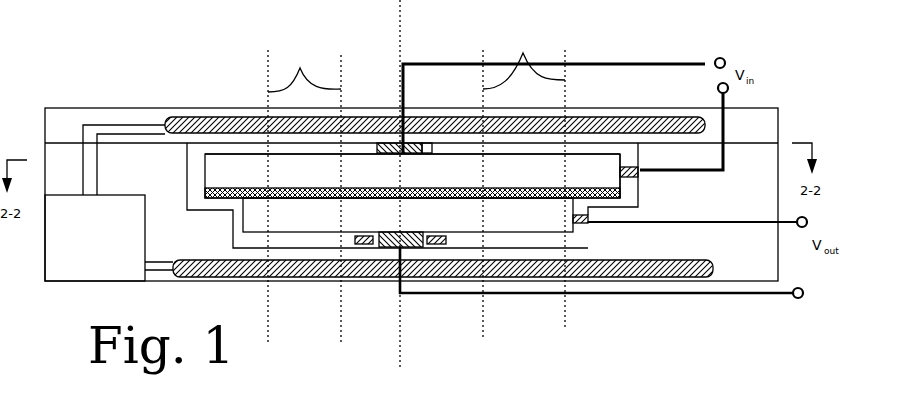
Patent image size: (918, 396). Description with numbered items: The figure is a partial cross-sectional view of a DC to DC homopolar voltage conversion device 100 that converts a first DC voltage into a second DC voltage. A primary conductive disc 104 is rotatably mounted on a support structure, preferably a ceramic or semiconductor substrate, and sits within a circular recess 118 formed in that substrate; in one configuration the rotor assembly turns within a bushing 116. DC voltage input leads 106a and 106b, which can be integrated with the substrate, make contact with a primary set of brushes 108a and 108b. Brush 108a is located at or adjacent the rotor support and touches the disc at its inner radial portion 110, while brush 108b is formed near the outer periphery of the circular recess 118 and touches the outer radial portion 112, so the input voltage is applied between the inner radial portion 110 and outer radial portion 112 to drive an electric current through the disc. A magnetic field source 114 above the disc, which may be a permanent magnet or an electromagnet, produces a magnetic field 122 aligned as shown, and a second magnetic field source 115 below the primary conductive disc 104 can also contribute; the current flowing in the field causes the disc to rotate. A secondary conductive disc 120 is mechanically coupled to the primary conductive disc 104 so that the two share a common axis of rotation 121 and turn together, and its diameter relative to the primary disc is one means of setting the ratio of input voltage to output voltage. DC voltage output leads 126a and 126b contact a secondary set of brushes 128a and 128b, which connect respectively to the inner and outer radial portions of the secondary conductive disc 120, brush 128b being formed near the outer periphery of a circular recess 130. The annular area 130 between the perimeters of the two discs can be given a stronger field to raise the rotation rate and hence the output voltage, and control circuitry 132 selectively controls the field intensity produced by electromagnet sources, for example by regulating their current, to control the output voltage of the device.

The device 100 is at (608, 313).
The primary conductive disc 104 is at (412, 176).
The DC voltage input lead 106a is at (703, 60).
The DC voltage input lead 106b is at (727, 125).
The brush 108a is at (397, 140).
The brush 108b is at (640, 177).
The inner radial portion 110 is at (430, 142).
The outer radial portion 112 is at (607, 153).
The magnetic field source 114 is at (230, 117).
The magnetic field source 115 is at (219, 282).
The bushing 116 is at (362, 246).
The circular recess 118 is at (187, 200).
The secondary conductive disc 120 is at (408, 215).
The common axis of rotation 121 is at (402, 342).
The magnetic field 122 is at (416, 64).
The DC voltage output lead 126a is at (687, 224).
The DC voltage output lead 126b is at (718, 296).
The brush 128a is at (413, 250).
The brush 128b is at (587, 226).
The circular recess 130 is at (233, 243).
The control circuitry 132 is at (109, 203).